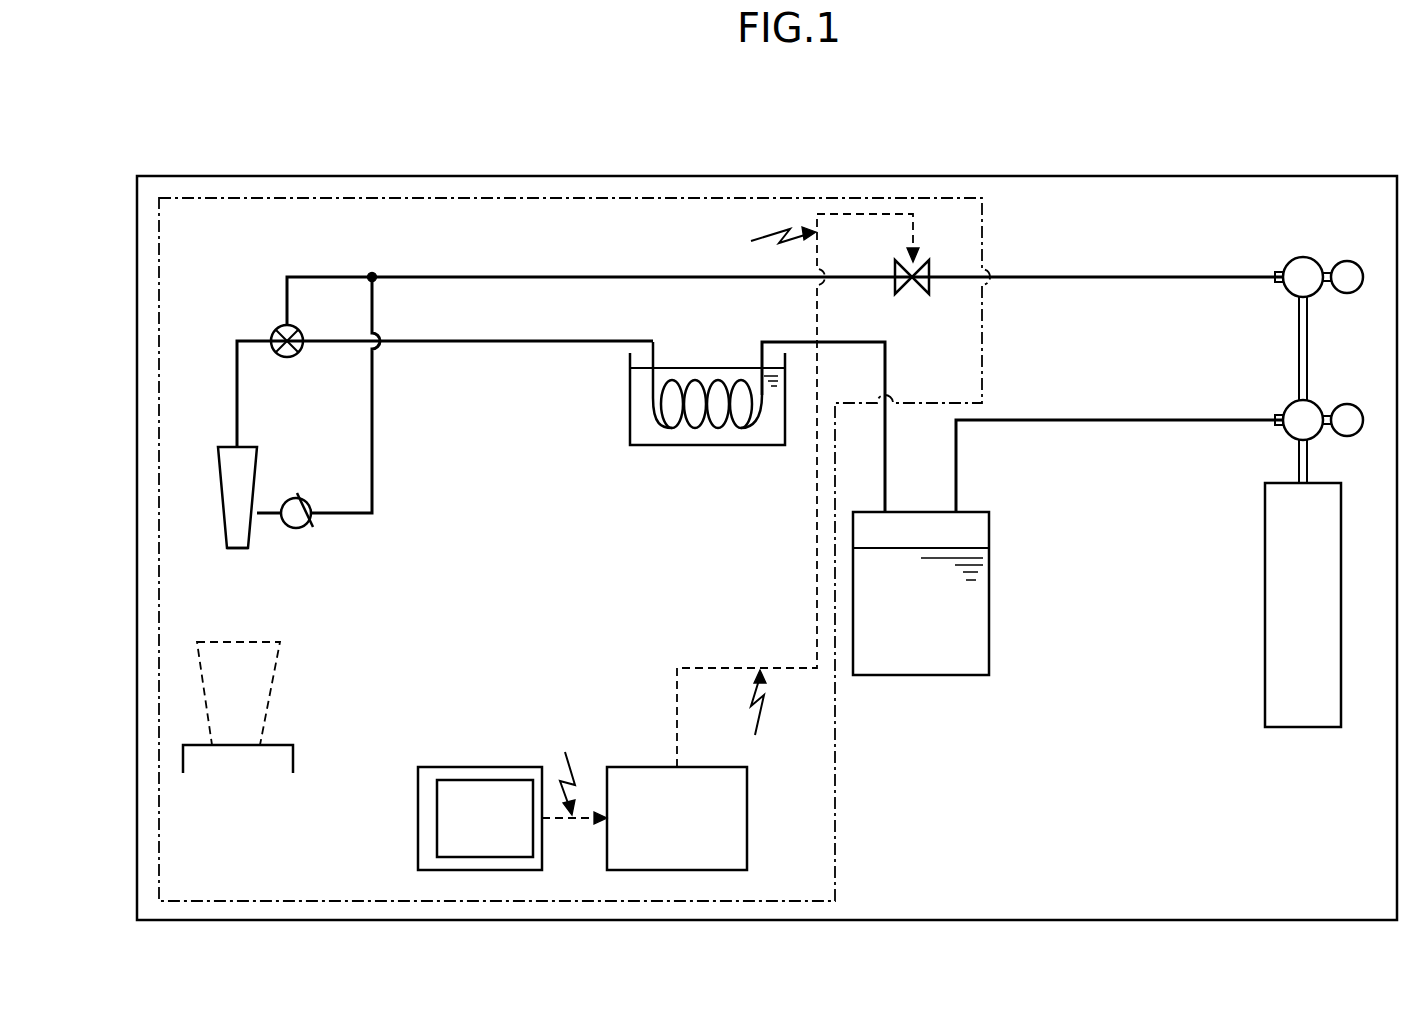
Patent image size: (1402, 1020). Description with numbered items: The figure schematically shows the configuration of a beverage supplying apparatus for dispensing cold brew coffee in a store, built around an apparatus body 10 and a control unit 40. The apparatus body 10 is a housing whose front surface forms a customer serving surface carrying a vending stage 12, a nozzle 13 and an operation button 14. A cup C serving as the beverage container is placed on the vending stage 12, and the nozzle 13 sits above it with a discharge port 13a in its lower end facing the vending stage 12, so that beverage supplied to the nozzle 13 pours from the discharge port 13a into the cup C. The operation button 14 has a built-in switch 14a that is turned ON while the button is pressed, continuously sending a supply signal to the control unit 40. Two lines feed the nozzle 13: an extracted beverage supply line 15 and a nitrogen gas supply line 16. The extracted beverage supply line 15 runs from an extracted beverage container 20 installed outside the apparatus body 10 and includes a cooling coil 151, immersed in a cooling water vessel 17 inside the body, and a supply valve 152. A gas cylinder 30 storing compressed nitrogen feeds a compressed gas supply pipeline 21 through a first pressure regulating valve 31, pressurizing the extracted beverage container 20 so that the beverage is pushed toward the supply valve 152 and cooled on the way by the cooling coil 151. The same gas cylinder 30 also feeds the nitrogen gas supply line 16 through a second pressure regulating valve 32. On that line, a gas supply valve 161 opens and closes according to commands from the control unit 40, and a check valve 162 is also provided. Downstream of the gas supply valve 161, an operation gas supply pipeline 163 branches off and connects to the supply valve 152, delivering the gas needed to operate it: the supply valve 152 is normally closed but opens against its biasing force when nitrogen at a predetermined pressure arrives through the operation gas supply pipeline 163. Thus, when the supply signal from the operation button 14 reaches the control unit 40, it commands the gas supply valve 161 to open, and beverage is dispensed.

The apparatus body 10 is at (1101, 176).
The vending stage 12 is at (200, 745).
The nozzle 13 is at (222, 481).
The discharge port 13a is at (236, 549).
The operation button 14 is at (468, 767).
The switch 14a is at (437, 826).
The extracted beverage supply line 15 is at (504, 352).
The nitrogen gas supply line 16 is at (590, 272).
The cooling water vessel 17 is at (630, 410).
The extracted beverage container 20 is at (989, 612).
The compressed gas supply pipeline 21 is at (1124, 420).
The gas cylinder 30 is at (1285, 659).
The first pressure regulating valve 31 is at (1318, 405).
The second pressure regulating valve 32 is at (1300, 257).
The control unit 40 is at (747, 818).
The cooling coil 151 is at (653, 418).
The supply valve 152 is at (278, 329).
The gas supply valve 161 is at (915, 295).
The check valve 162 is at (300, 528).
The operation gas supply pipeline 163 is at (324, 277).
The cup C is at (275, 680).